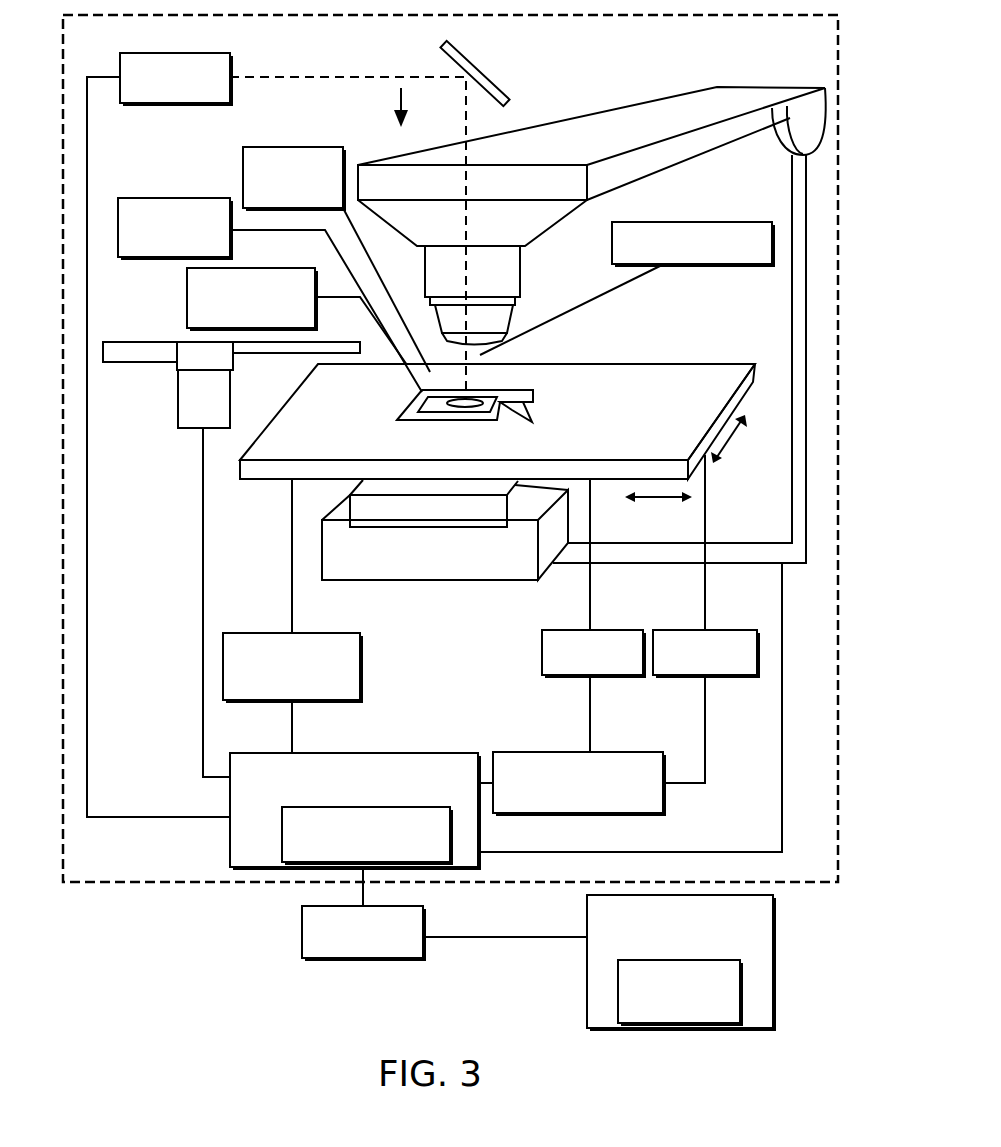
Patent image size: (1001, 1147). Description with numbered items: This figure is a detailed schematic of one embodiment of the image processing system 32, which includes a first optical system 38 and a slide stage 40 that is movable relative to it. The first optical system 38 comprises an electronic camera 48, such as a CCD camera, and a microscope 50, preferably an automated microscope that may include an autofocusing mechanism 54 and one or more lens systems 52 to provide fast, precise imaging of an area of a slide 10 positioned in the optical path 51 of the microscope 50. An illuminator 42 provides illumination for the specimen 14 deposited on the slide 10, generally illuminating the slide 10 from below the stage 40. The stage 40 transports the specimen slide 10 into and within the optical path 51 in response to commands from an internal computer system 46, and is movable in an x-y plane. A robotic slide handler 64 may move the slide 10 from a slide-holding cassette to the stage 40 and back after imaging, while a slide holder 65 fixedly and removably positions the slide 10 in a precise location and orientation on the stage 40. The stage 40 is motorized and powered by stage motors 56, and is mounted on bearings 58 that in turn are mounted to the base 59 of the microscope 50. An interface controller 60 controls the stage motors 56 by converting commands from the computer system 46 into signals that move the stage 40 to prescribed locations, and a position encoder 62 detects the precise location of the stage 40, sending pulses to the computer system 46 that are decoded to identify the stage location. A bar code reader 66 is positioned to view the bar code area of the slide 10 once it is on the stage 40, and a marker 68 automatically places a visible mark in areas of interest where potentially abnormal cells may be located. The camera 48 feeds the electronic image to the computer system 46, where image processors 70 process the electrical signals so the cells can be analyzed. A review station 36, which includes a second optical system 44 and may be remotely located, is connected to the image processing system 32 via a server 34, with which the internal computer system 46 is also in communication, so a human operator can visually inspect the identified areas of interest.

The slide 10 is at (493, 388).
The specimen 14 is at (460, 408).
The image processing system 32 is at (178, 885).
The server 34 is at (345, 960).
The review station 36 is at (775, 937).
The first optical system 38 is at (508, 61).
The slide stage 40 is at (722, 394).
The illuminator 42 is at (707, 266).
The second optical system 44 is at (680, 1026).
The internal computer system 46 is at (430, 752).
The electronic camera 48 is at (142, 54).
The microscope 50 is at (761, 86).
The optical path 51 is at (465, 105).
The lens system 52 is at (518, 270).
The autofocusing mechanism 54 is at (298, 147).
The stage motor 56 is at (617, 678).
The bearings 58 is at (348, 498).
The base 59 is at (425, 568).
The interface controller 60 is at (588, 816).
The position encoder 62 is at (362, 670).
The robotic slide handler 64 is at (185, 401).
The slide holder 65 is at (492, 405).
The bar code reader 66 is at (186, 297).
The marker 68 is at (175, 198).
The image processor 70 is at (282, 840).